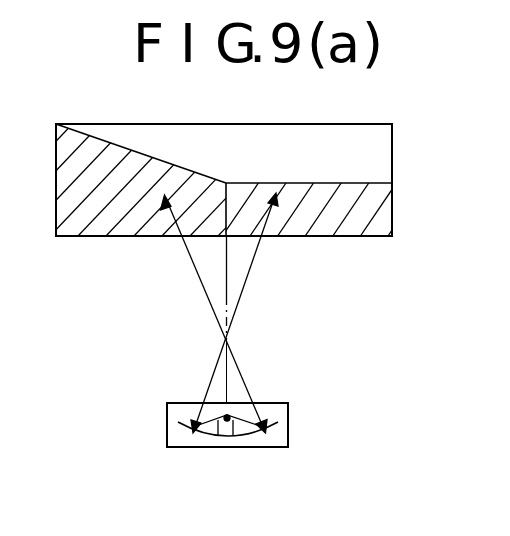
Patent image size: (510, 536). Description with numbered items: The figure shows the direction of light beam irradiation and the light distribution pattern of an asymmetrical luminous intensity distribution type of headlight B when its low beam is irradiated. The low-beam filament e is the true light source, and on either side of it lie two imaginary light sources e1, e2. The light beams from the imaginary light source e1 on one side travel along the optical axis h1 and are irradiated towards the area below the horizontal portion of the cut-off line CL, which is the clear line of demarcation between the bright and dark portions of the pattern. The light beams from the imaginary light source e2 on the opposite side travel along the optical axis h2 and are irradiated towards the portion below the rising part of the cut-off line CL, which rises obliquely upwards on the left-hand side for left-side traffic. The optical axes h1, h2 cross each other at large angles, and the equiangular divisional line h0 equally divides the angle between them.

The cut-off line CL is at (258, 183).
The equiangular divisional line h0 is at (228, 248).
The optical axis h1 is at (250, 273).
The optical axis h2 is at (192, 266).
The imaginary light source e1 is at (194, 412).
The imaginary light source e2 is at (273, 411).
The low-beam filament e is at (216, 426).
The headlight B is at (167, 427).